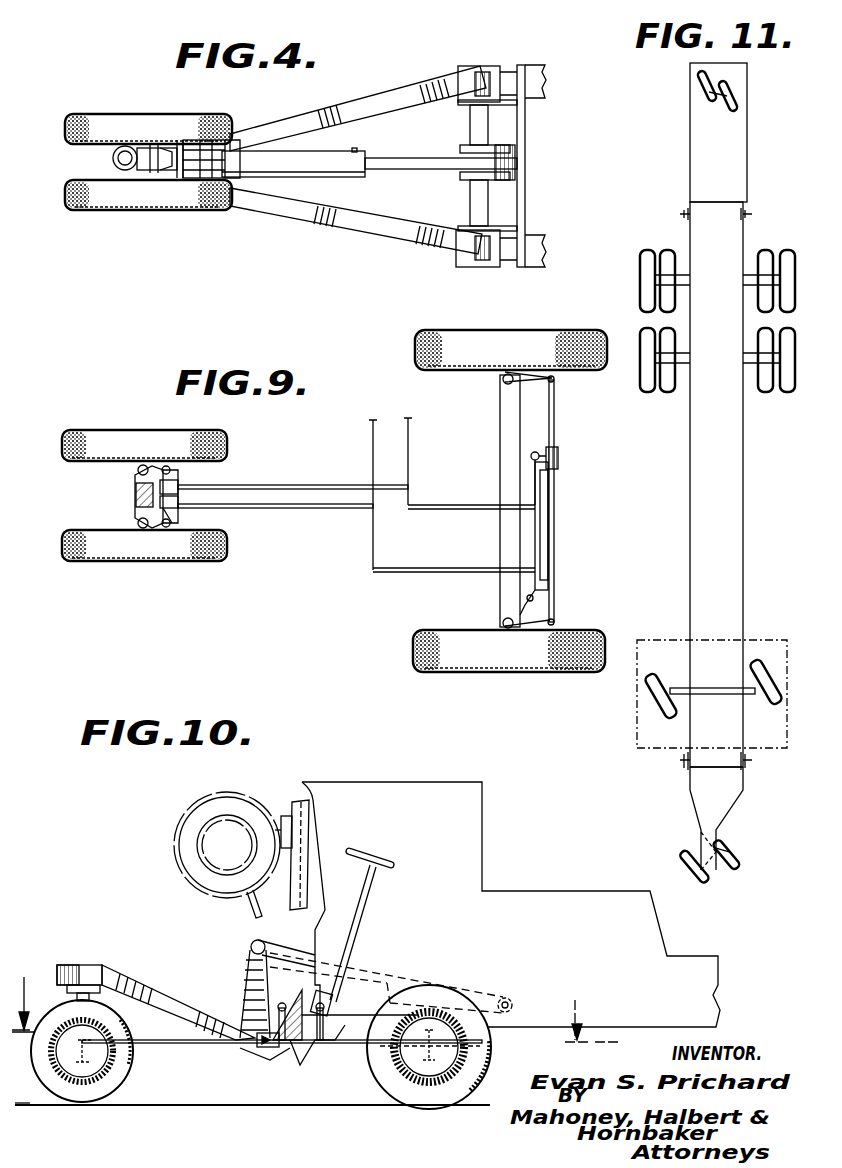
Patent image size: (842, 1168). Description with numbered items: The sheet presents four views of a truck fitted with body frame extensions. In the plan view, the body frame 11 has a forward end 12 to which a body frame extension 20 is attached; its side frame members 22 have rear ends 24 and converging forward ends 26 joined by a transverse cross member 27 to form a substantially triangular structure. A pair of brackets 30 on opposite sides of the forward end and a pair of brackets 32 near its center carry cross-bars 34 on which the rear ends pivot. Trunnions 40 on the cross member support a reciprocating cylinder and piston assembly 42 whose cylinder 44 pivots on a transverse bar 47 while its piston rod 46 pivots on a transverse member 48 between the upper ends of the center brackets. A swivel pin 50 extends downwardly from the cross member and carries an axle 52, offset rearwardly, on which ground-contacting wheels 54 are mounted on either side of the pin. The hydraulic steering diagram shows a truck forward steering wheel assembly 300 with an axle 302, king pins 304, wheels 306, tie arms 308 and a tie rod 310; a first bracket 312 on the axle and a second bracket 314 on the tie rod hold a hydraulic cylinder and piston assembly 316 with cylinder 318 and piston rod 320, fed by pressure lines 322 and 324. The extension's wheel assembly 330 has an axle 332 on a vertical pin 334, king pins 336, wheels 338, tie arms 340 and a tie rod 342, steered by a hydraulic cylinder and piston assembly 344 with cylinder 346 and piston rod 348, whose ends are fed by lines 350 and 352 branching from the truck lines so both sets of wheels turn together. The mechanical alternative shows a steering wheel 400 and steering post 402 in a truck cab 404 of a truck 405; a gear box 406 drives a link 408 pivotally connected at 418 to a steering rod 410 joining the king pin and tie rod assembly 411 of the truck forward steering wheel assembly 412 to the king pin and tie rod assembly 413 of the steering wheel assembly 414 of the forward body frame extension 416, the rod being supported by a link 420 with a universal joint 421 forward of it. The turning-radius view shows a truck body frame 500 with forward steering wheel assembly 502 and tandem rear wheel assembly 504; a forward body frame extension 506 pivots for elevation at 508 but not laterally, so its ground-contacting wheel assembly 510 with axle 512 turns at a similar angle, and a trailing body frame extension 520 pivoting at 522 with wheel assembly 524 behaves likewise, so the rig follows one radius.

In FIG. 4, the body frame 11 is at (530, 236).
In FIG. 4, the forward end 12 is at (527, 160).
In FIG. 10, the forward end 12 is at (315, 997).
In FIG. 4, the body frame extension 20 is at (320, 224).
In FIG. 4, the side frame members 22 is at (383, 78).
In FIG. 4, the rear ends 24 is at (478, 70).
In FIG. 4, the forward ends 26 is at (178, 140).
In FIG. 4, the transverse cross member 27 is at (160, 178).
In FIG. 4, the brackets 30 is at (462, 103).
In FIG. 4, the brackets 32 is at (460, 148).
In FIG. 4, the cross-bars 34 is at (470, 126).
In FIG. 4, the trunnions 40 is at (197, 140).
In FIG. 4, the reciprocating cylinder and piston assembly 42 is at (368, 154).
In FIG. 4, the cylinder 44 is at (322, 151).
In FIG. 4, the piston rod 46 is at (400, 170).
In FIG. 4, the transverse bar 47 is at (225, 138).
In FIG. 4, the transverse member 48 is at (500, 150).
In FIG. 4, the swivel pin 50 is at (112, 158).
In FIG. 4, the axle 52 is at (141, 172).
In FIG. 4, the ground-contacting wheels 54 is at (115, 112).
In FIG. 9, the truck forward steering wheel assembly 300 is at (525, 322).
In FIG. 9, the axle 302 is at (500, 428).
In FIG. 9, the steering wheel king pins 304 is at (503, 380).
In FIG. 9, the wheels 306 is at (492, 312).
In FIG. 9, the tie arms 308 is at (555, 380).
In FIG. 9, the tie rod 310 is at (556, 430).
In FIG. 9, the first bracket 312 is at (530, 598).
In FIG. 9, the second bracket 314 is at (560, 452).
In FIG. 9, the hydraulic cylinder and piston assembly 316 is at (540, 525).
In FIG. 9, the cylinder 318 is at (545, 548).
In FIG. 9, the piston rod 320 is at (540, 484).
In FIG. 9, the hydraulic fluid pressure line 322 is at (478, 474).
In FIG. 9, the hydraulic fluid pressure line 324 is at (470, 544).
In FIG. 9, the wheel assembly 330 is at (120, 390).
In FIG. 9, the axle 332 is at (135, 478).
In FIG. 9, the pin 334 is at (136, 500).
In FIG. 9, the steering wheel king pins 336 is at (138, 470).
In FIG. 9, the wheels 338 is at (175, 423).
In FIG. 9, the tie arms 340 is at (175, 465).
In FIG. 9, the tie rod 342 is at (180, 492).
In FIG. 9, the hydraulic cylinder and piston assembly 344 is at (180, 504).
In FIG. 9, the cylinder 346 is at (172, 516).
In FIG. 9, the piston rod 348 is at (180, 472).
In FIG. 9, the hydraulic fluid pressure line 350 is at (342, 465).
In FIG. 9, the hydraulic fluid pressure line 352 is at (350, 515).
In FIG. 10, the steering wheel 400 is at (385, 872).
In FIG. 10, the steering post 402 is at (355, 928).
In FIG. 10, the truck cab 404 is at (380, 784).
In FIG. 10, the truck 405 is at (580, 895).
In FIG. 10, the gear box 406 is at (335, 1000).
In FIG. 10, the link 408 is at (300, 1050).
In FIG. 10, the steering rod 410 is at (325, 1044).
In FIG. 10, the king pin and tie rod assembly 411 is at (430, 1028).
In FIG. 10, the truck forward steering wheel assembly 412 is at (490, 1050).
In FIG. 10, the king pin and tie rod assembly 413 is at (108, 1035).
In FIG. 10, the steering wheel assembly 414 is at (125, 1078).
In FIG. 10, the forward body frame extension 416 is at (178, 988).
In FIG. 10, the pivotal connection 418 is at (322, 1058).
In FIG. 10, the link 420 is at (258, 1044).
In FIG. 10, the universal joint 421 is at (260, 1052).
In FIG. 11, the truck body frame 500 is at (744, 500).
In FIG. 11, the forward steering wheel assembly 502 is at (702, 688).
In FIG. 11, the tandem rear wheel assembly 504 is at (797, 264).
In FIG. 11, the forward body frame extension 506 is at (690, 804).
In FIG. 11, the pivotal mounting 508 is at (682, 762).
In FIG. 11, the ground-contacting wheel assembly 510 is at (732, 852).
In FIG. 11, the axle 512 is at (700, 848).
In FIG. 11, the trailing body frame extension 520 is at (688, 130).
In FIG. 11, the pivotal mounting 522 is at (682, 214).
In FIG. 11, the ground-contacting wheel assembly 524 is at (698, 88).